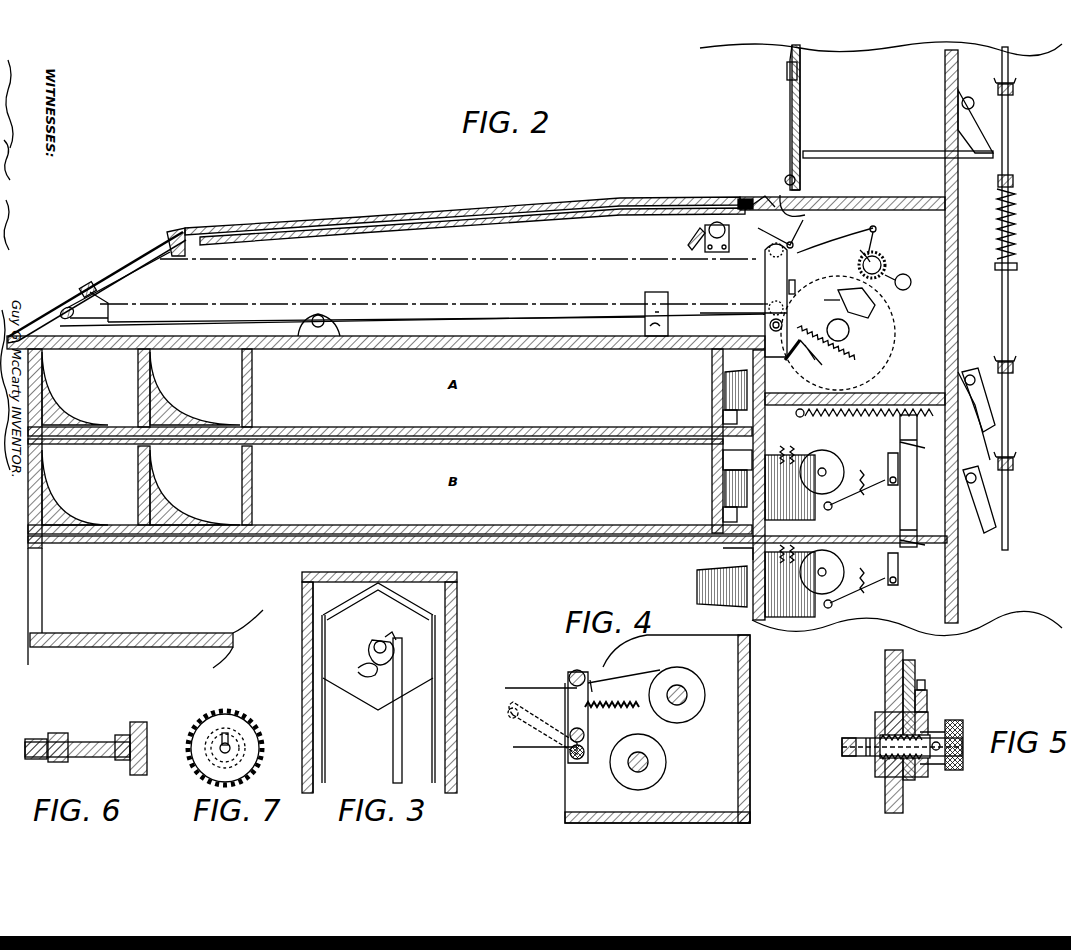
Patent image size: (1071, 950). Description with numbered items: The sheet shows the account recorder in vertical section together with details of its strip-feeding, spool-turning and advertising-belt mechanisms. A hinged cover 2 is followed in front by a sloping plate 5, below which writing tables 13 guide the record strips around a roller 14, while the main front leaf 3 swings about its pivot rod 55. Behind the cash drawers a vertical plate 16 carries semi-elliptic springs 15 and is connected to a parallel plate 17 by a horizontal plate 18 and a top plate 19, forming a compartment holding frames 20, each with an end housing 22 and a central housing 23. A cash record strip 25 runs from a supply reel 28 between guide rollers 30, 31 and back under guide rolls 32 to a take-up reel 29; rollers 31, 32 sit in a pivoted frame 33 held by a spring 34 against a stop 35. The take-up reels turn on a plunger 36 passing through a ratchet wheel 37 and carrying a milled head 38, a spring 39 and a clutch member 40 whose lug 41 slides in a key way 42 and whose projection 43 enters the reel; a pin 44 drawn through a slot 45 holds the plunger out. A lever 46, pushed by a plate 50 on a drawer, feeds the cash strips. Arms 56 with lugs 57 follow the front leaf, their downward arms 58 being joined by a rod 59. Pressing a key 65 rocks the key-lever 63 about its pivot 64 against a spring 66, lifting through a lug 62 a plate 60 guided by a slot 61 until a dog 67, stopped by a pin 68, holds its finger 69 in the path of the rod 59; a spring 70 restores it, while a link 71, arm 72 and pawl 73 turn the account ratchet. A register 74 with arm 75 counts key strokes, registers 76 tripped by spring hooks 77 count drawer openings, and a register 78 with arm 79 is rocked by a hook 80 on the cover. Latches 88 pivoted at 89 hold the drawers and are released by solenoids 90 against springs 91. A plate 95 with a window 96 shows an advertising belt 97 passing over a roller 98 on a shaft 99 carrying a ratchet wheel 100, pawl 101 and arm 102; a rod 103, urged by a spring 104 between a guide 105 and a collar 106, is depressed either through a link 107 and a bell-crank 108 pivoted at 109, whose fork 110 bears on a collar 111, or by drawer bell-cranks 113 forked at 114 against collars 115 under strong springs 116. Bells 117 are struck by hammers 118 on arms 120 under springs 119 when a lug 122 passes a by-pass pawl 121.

In FIG. 2, the hinged cover 2 is at (200, 232).
In FIG. 2, the main front leaf 3 is at (801, 65).
In FIG. 2, the plate 5 is at (150, 262).
In FIG. 2, the writing tables 13 is at (125, 274).
In FIG. 2, the roller 14 is at (61, 308).
In FIG. 2, the springs 15 is at (725, 385).
In FIG. 2, the vertically extending plate 16 is at (753, 553).
In FIG. 2, the plate 17 is at (945, 353).
In FIG. 3, the plate 17 is at (457, 611).
In FIG. 2, the horizontal plate 18 is at (895, 393).
In FIG. 2, the top plate 19 is at (900, 208).
In FIG. 4, the frame 20 is at (680, 815).
In FIG. 2, the end housing 22 is at (854, 333).
In FIG. 5, the end housing 22 is at (885, 797).
In FIG. 4, the central housing 23 is at (657, 729).
In FIG. 2, the cash record strip 25 is at (525, 262).
In FIG. 4, the cash record strip 25 is at (530, 752).
In FIG. 4, the supply reel 28 is at (630, 770).
In FIG. 4, the take-up reel 29 is at (688, 690).
In FIG. 4, the guide roller 30 is at (572, 757).
In FIG. 4, the guide roller 31 is at (570, 734).
In FIG. 4, the guide rolls 32 is at (569, 669).
In FIG. 2, the pivoted frame 33 is at (850, 333).
In FIG. 4, the pivoted frame 33 is at (568, 698).
In FIG. 4, the spring 34 is at (610, 712).
In FIG. 4, the stop 35 is at (592, 685).
In FIG. 5, the plunger 36 is at (842, 746).
In FIG. 6, the plunger 36 is at (95, 742).
In FIG. 2, the ratchet wheel 37 is at (910, 280).
In FIG. 5, the ratchet wheel 37 is at (915, 778).
In FIG. 7, the ratchet wheel 37 is at (248, 725).
In FIG. 2, the milled head 38 is at (886, 258).
In FIG. 5, the milled head 38 is at (963, 755).
In FIG. 6, the milled head 38 is at (145, 722).
In FIG. 5, the spring 39 is at (878, 770).
In FIG. 5, the clutch member 40 is at (868, 740).
In FIG. 5, the lug 41 is at (868, 735).
In FIG. 6, the lug 41 is at (60, 733).
In FIG. 5, the key way 42 is at (927, 716).
In FIG. 5, the projection 43 is at (845, 757).
In FIG. 5, the pin 44 is at (928, 762).
In FIG. 6, the pin 44 is at (98, 757).
In FIG. 5, the slot 45 is at (940, 740).
In FIG. 7, the slot 45 is at (228, 734).
In FIG. 2, the lever 46 is at (917, 512).
In FIG. 2, the plate 50 is at (723, 415).
In FIG. 2, the pivot rod 55 is at (796, 178).
In FIG. 2, the arms 56 is at (790, 113).
In FIG. 2, the lugs 57 is at (787, 72).
In FIG. 2, the arm 58 is at (790, 214).
In FIG. 2, the rod 59 is at (760, 197).
In FIG. 2, the plate 60 is at (775, 268).
In FIG. 2, the slot 61 is at (788, 289).
In FIG. 2, the lug 62 is at (760, 312).
In FIG. 2, the account key-lever 63 is at (495, 316).
In FIG. 2, the pivot point 64 is at (324, 318).
In FIG. 2, the push button 65 is at (88, 286).
In FIG. 2, the spring 66 is at (690, 330).
In FIG. 2, the spring-pressed dog 67 is at (815, 352).
In FIG. 2, the stationary pin 68 is at (790, 352).
In FIG. 2, the finger 69 is at (765, 231).
In FIG. 2, the spring 70 is at (848, 356).
In FIG. 2, the link 71 is at (860, 230).
In FIG. 2, the arm 72 is at (872, 237).
In FIG. 2, the pawl 73 is at (860, 252).
In FIG. 2, the register 74 is at (880, 300).
In FIG. 2, the operating arm 75 is at (828, 298).
In FIG. 2, the special register 76 is at (62, 402).
In FIG. 2, the spring hook 77 is at (62, 636).
In FIG. 2, the special register 78 is at (735, 204).
In FIG. 2, the operating arm 79 is at (704, 233).
In FIG. 2, the pivoted hook 80 is at (688, 246).
In FIG. 2, the latch 88 is at (800, 450).
In FIG. 2, the pivot 89 is at (737, 460).
In FIG. 2, the solenoid 90 is at (765, 490).
In FIG. 2, the spring 91 is at (796, 414).
In FIG. 3, the plate 95 is at (302, 607).
In FIG. 3, the transparent window 96 is at (312, 648).
In FIG. 3, the advertising belt 97 is at (325, 722).
In FIG. 3, the roller 98 is at (408, 606).
In FIG. 3, the shaft 99 is at (372, 640).
In FIG. 3, the ratchet wheel 100 is at (373, 645).
In FIG. 3, the actuating pawl 101 is at (394, 636).
In FIG. 3, the arm 102 is at (390, 652).
In FIG. 2, the rod 103 is at (1008, 321).
In FIG. 3, the rod 103 is at (393, 739).
In FIG. 2, the spring 104 is at (1015, 225).
In FIG. 2, the stationary guide 105 is at (1017, 267).
In FIG. 2, the collar 106 is at (1013, 181).
In FIG. 2, the link 107 is at (892, 142).
In FIG. 2, the bell-crank 108 is at (985, 125).
In FIG. 2, the pivot 109 is at (962, 103).
In FIG. 2, the bifurcated end 110 is at (1014, 80).
In FIG. 2, the collar 111 is at (1013, 92).
In FIG. 2, the bell-crank 113 is at (990, 393).
In FIG. 2, the bifurcated arms 114 is at (1014, 358).
In FIG. 2, the collars 115 is at (1013, 369).
In FIG. 2, the strong springs 116 is at (985, 411).
In FIG. 2, the bells 117 is at (835, 475).
In FIG. 2, the hammers 118 is at (832, 508).
In FIG. 2, the springs 119 is at (870, 495).
In FIG. 2, the hammer arms 120 is at (899, 480).
In FIG. 2, the by-pass pawl 121 is at (900, 462).
In FIG. 2, the lug 122 is at (930, 440).